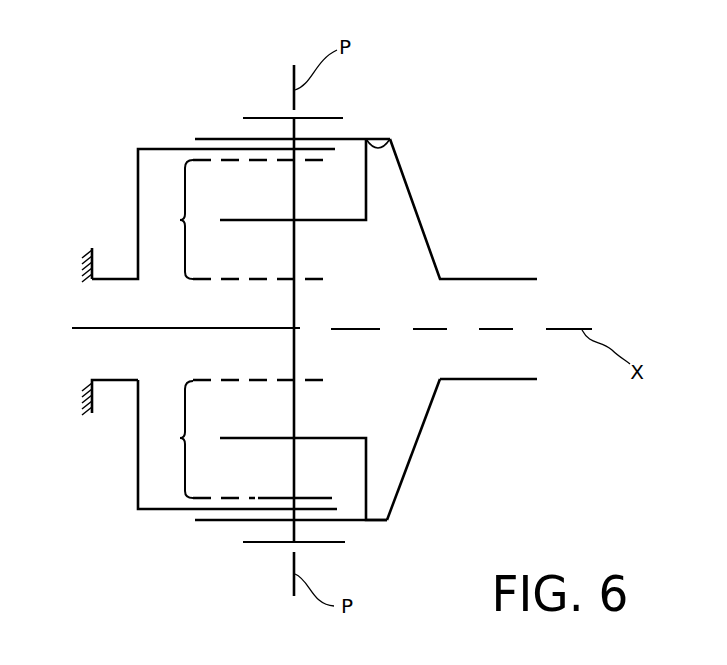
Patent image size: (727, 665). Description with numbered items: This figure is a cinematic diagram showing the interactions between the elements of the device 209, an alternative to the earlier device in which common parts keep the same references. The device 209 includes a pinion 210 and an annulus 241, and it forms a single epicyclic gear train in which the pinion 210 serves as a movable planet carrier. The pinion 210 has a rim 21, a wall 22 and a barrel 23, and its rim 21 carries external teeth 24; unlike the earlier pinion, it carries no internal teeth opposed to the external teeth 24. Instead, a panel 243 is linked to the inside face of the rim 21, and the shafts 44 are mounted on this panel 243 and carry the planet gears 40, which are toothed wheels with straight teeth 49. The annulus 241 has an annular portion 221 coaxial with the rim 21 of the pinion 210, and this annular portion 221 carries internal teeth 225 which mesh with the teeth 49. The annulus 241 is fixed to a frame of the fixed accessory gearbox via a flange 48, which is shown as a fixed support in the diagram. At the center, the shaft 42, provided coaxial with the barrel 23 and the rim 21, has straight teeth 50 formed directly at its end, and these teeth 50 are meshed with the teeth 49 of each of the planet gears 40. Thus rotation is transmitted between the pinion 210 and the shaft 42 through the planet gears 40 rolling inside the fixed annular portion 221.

The device 209 is at (213, 78).
The annular portion 221 is at (149, 149).
The flange 48 is at (92, 250).
The shaft 42 is at (76, 328).
The planet gears 40 is at (239, 329).
The annulus 241 is at (137, 488).
The pinion 210 is at (218, 521).
The external teeth 24 is at (323, 118).
The internal teeth 225 is at (315, 158).
The panel 243 is at (390, 139).
The teeth 49 is at (296, 160).
The shafts 44 is at (346, 221).
The teeth 50 is at (303, 280).
The barrel 23 is at (462, 379).
The wall 22 is at (417, 452).
The rim 21 is at (373, 520).